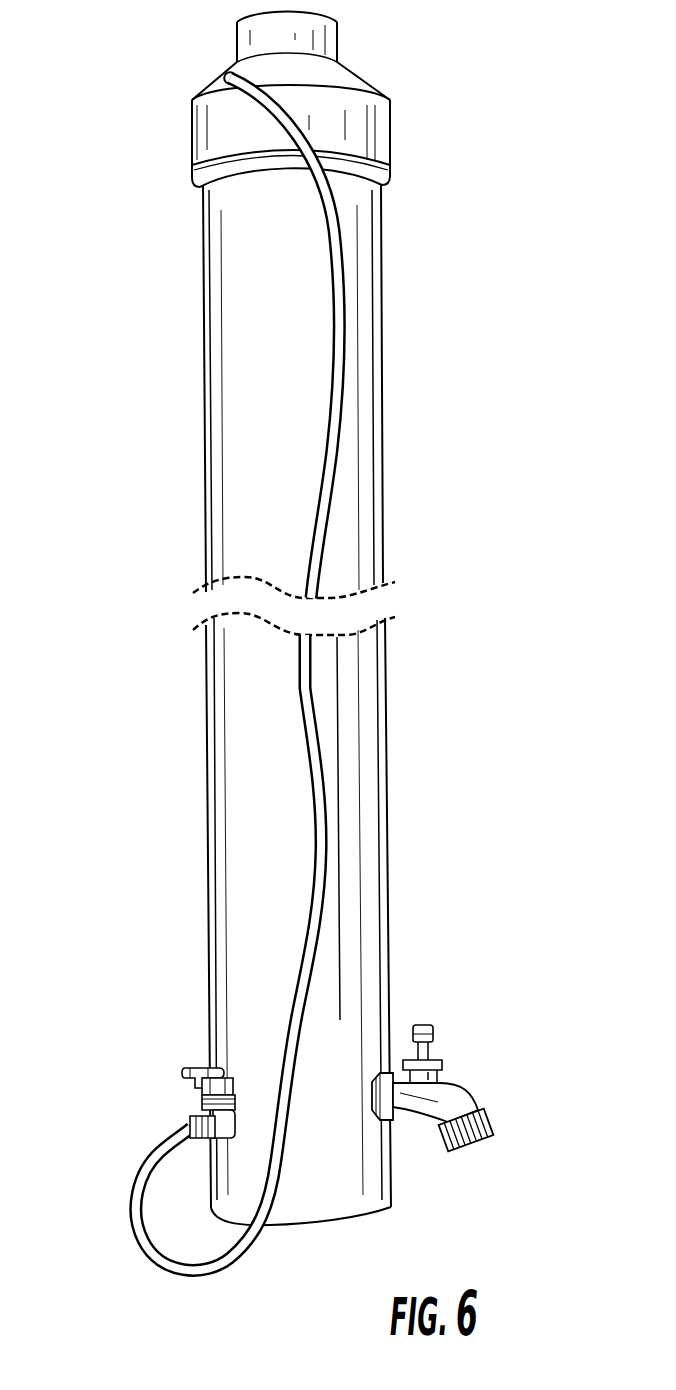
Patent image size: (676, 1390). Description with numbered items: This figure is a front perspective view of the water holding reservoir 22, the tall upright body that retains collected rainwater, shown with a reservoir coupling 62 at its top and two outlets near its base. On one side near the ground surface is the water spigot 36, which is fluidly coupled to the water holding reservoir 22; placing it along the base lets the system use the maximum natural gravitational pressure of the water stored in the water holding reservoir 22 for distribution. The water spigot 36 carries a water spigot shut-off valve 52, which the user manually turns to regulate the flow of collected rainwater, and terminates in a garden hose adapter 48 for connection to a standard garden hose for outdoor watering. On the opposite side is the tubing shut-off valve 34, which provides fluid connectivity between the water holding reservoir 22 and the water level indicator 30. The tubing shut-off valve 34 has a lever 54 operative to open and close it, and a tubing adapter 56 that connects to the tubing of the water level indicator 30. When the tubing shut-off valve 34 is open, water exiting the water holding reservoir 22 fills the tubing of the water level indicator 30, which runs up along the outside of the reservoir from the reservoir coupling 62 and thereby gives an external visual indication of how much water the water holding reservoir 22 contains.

The water holding reservoir 22 is at (237, 373).
The water level indicator 30 is at (327, 488).
The tubing shut-off valve 34 is at (151, 1052).
The water spigot 36 is at (479, 1043).
The garden hose adapter 48 is at (490, 1128).
The water spigot shut-off valve 52 is at (428, 1020).
The lever 54 is at (190, 1068).
The tubing adapter 56 is at (193, 1107).
The cap 62 is at (368, 130).